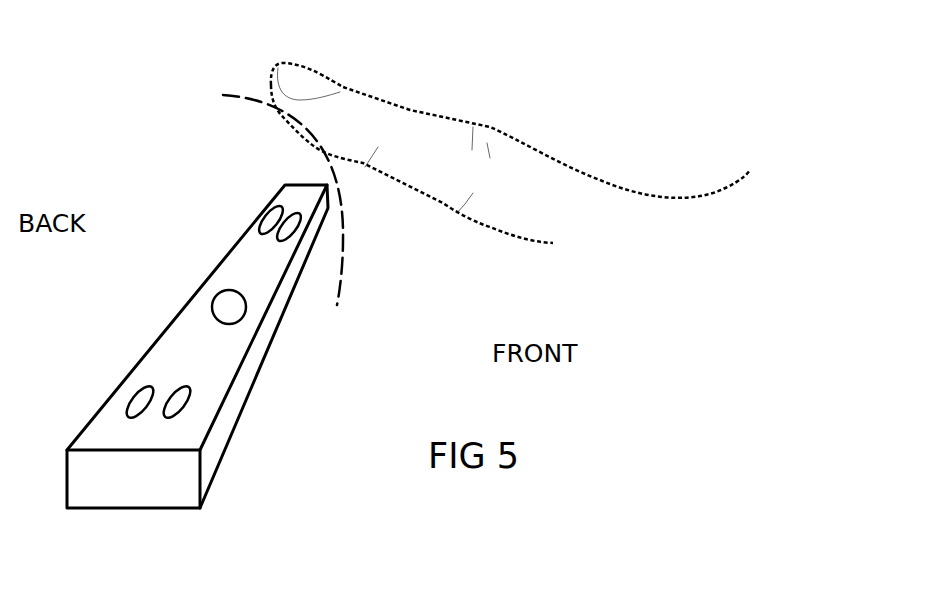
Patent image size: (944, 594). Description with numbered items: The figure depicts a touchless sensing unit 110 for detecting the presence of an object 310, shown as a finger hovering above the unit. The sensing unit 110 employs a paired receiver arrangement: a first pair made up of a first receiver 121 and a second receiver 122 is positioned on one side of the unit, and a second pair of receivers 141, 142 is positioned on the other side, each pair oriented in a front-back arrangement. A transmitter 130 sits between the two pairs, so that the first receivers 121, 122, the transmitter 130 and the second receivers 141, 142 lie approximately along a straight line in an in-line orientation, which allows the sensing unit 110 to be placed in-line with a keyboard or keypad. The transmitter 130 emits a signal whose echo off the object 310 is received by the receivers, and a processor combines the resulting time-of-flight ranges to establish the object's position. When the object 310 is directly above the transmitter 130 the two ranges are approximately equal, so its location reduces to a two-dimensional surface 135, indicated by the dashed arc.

The sensing unit 110 is at (128, 508).
The first receiver 121 is at (187, 407).
The second receiver 122 is at (137, 385).
The transmitter 130 is at (222, 303).
The two-dimensional surface 135 is at (333, 318).
The receiver 141 is at (280, 243).
The receiver 142 is at (268, 208).
The object 310 is at (525, 243).